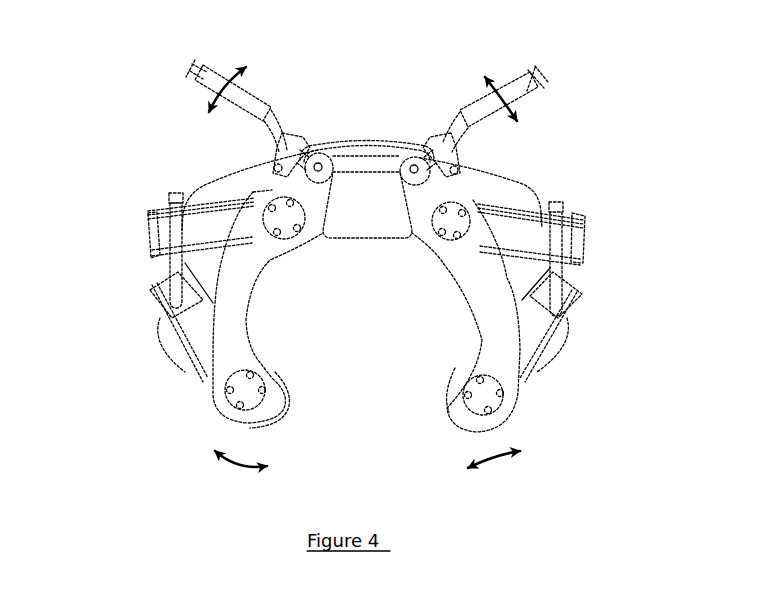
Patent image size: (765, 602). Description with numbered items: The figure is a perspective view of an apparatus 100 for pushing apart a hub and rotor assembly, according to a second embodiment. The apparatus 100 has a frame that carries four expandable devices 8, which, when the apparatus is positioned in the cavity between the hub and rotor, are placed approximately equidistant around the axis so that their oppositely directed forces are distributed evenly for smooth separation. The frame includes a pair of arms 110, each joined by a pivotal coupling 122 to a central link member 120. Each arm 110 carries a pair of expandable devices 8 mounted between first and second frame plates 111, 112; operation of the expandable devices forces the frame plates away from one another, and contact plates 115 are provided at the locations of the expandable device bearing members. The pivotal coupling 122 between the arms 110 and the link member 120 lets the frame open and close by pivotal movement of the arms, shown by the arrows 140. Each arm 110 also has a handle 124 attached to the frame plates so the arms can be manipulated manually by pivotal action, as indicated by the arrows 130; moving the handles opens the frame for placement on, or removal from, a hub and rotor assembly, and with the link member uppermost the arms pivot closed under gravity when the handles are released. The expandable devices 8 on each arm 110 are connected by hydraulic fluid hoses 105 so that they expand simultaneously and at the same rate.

The apparatus 100 is at (116, 82).
The hydraulic fluid hoses 105 is at (183, 265).
The arms 110 is at (117, 305).
The first frame plate 111 is at (213, 177).
The second frame plate 112 is at (243, 347).
The contact plates 115 is at (288, 231).
The link member 120 is at (370, 150).
The pivotal coupling 122 is at (318, 161).
The handle 124 is at (195, 70).
The arrows 130 is at (222, 90).
The arrows 140 is at (240, 467).
The expandable devices 8 is at (154, 213).